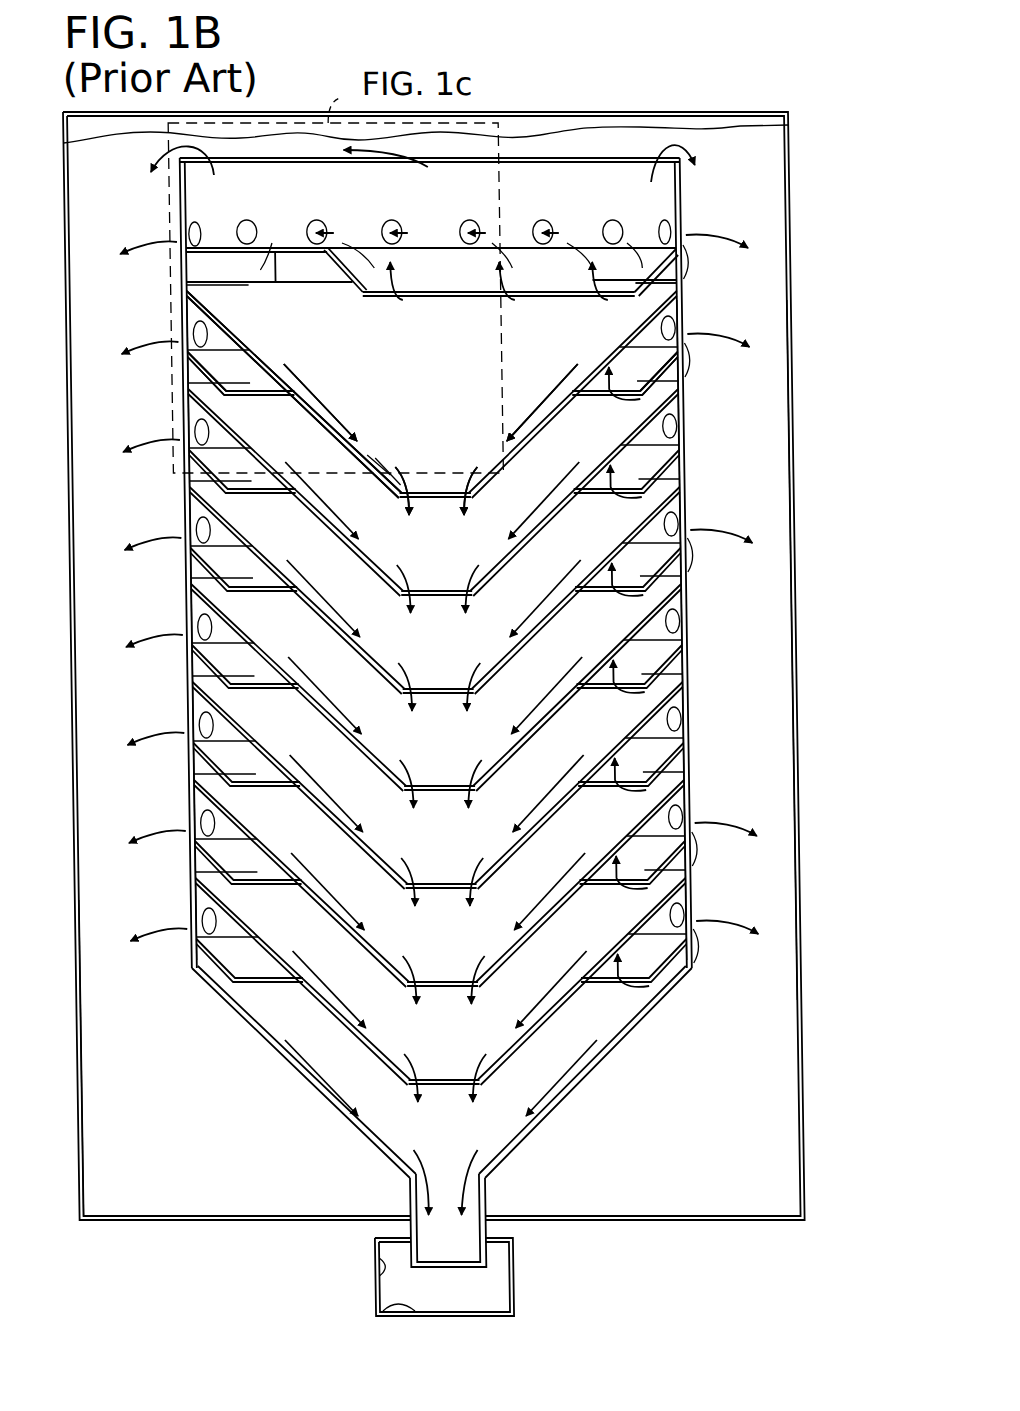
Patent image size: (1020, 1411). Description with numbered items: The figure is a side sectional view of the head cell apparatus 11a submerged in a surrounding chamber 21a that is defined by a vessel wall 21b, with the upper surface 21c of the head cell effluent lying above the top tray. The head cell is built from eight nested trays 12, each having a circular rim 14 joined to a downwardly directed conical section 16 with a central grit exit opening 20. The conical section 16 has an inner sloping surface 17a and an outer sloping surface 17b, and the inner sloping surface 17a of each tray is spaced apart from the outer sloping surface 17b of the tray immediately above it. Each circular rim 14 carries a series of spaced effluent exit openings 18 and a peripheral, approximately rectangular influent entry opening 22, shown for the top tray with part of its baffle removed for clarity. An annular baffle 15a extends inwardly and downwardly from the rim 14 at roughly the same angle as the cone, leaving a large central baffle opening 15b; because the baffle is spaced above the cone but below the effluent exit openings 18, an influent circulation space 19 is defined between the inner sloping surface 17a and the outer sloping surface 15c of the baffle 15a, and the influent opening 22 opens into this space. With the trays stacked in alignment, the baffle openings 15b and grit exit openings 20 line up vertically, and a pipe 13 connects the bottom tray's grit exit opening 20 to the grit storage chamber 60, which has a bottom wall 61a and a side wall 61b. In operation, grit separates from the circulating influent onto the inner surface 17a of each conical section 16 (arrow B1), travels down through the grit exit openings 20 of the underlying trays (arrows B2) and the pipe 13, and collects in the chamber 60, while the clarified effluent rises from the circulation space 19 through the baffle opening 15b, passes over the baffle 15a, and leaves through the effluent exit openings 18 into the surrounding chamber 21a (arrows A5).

The head cell apparatus 11a is at (702, 100).
The tray 12 is at (180, 305).
The pipe 13 is at (392, 1230).
The circular rim 14 is at (684, 306).
The baffle 15a is at (248, 353).
The baffle opening 15b is at (454, 297).
The outer sloping surface of the baffle 15c is at (213, 394).
The conical section 16 is at (232, 325).
The inner sloping surface 17a is at (368, 458).
The outer sloping surface 17b is at (362, 455).
The effluent exit openings 18 is at (308, 222).
The influent circulation space 19 is at (689, 262).
The grit exit opening 20 is at (437, 490).
The surrounding chamber 21a is at (165, 1150).
The vessel wall 21b is at (788, 498).
The upper surface of head cell effluent 21c is at (572, 134).
The influent entry opening 22 is at (235, 272).
The grit storage chamber 60 is at (498, 1292).
The bottom wall 61a is at (372, 1304).
The side wall 61b is at (362, 1280).
The effluent flow arrows A5 is at (172, 243).
The grit separation arrow B1 is at (318, 392).
The grit descent arrows B2 is at (425, 508).